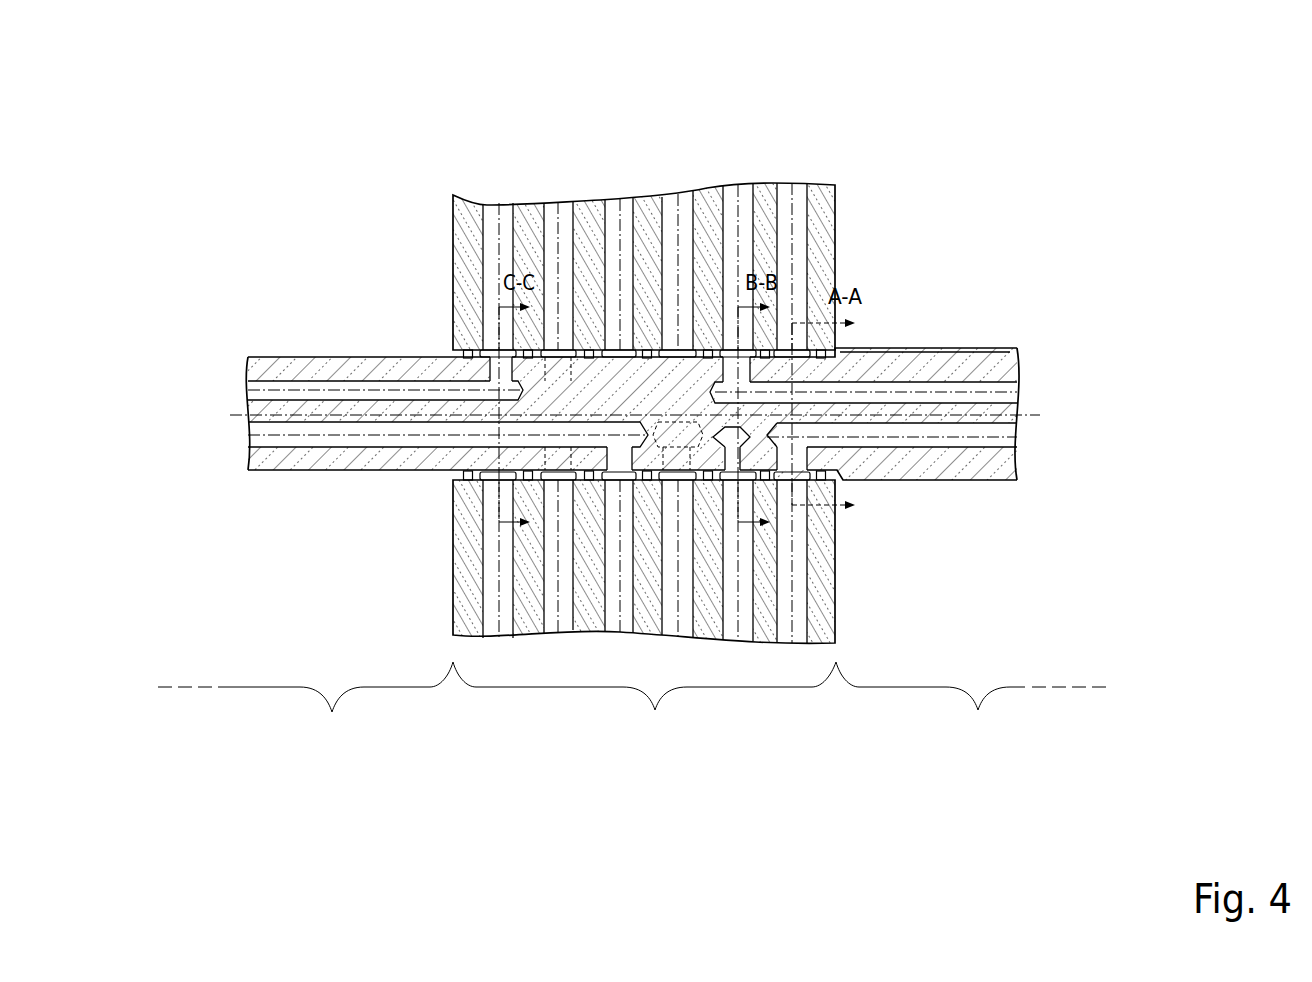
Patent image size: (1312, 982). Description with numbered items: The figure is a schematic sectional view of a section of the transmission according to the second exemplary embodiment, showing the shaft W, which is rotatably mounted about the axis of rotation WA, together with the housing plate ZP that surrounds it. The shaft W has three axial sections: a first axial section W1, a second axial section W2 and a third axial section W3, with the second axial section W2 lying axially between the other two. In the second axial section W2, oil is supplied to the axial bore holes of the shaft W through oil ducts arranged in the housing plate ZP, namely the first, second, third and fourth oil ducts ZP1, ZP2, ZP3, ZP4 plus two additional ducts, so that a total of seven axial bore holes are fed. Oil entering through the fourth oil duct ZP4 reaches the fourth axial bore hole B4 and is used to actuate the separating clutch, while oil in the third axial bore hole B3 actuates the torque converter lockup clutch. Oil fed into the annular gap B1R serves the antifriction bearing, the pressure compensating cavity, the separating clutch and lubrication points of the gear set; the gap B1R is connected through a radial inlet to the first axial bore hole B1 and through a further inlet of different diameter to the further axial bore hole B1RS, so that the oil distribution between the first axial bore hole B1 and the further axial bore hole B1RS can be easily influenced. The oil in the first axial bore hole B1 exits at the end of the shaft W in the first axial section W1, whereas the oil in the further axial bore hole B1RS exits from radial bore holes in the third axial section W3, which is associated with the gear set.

The shaft W is at (258, 340).
The axis of rotation WA is at (1020, 410).
The first axial section W1 is at (305, 709).
The second axial section W2 is at (644, 709).
The third axial section W3 is at (973, 709).
The fourth axial bore hole B4 is at (256, 336).
The third axial bore hole B3 is at (272, 440).
The first axial bore hole B1 is at (722, 455).
The annular gap B1R is at (728, 375).
The further axial bore hole B1RS is at (897, 383).
The housing plate ZP is at (463, 260).
The first oil duct ZP1 is at (742, 200).
The second oil duct ZP2 is at (555, 213).
The third oil duct ZP3 is at (612, 207).
The fourth oil duct ZP4 is at (490, 212).